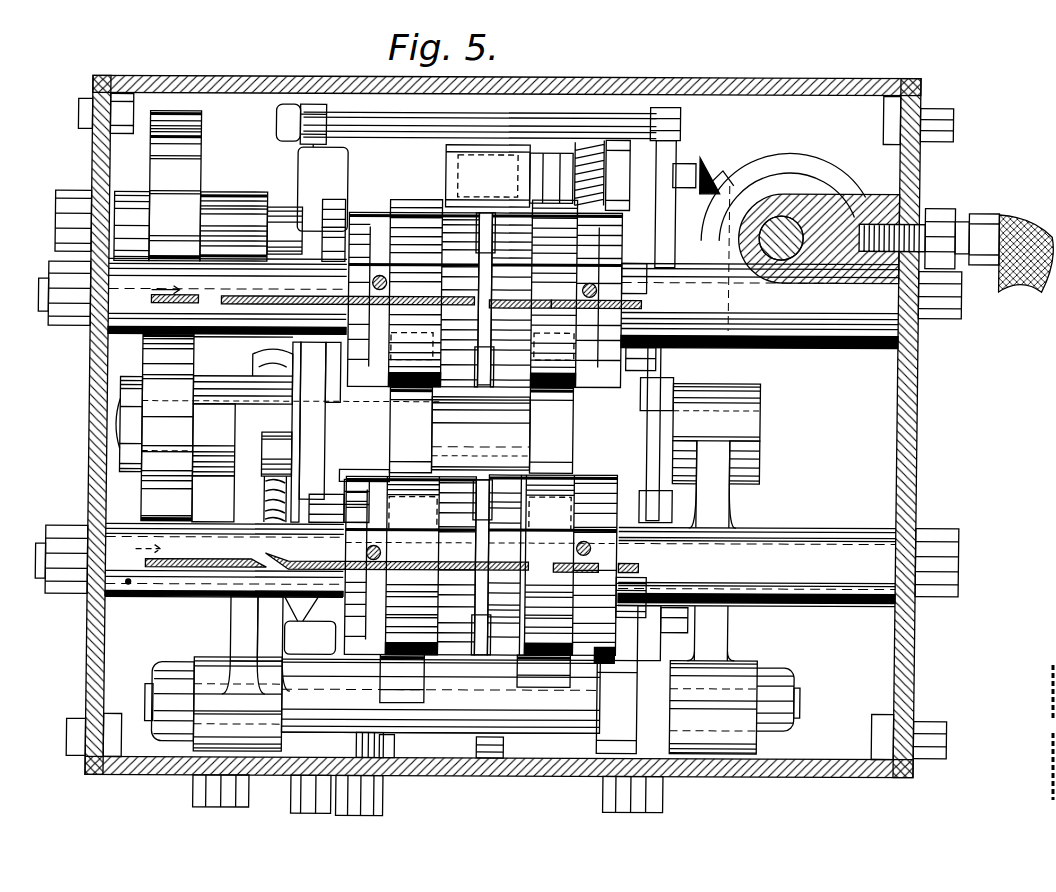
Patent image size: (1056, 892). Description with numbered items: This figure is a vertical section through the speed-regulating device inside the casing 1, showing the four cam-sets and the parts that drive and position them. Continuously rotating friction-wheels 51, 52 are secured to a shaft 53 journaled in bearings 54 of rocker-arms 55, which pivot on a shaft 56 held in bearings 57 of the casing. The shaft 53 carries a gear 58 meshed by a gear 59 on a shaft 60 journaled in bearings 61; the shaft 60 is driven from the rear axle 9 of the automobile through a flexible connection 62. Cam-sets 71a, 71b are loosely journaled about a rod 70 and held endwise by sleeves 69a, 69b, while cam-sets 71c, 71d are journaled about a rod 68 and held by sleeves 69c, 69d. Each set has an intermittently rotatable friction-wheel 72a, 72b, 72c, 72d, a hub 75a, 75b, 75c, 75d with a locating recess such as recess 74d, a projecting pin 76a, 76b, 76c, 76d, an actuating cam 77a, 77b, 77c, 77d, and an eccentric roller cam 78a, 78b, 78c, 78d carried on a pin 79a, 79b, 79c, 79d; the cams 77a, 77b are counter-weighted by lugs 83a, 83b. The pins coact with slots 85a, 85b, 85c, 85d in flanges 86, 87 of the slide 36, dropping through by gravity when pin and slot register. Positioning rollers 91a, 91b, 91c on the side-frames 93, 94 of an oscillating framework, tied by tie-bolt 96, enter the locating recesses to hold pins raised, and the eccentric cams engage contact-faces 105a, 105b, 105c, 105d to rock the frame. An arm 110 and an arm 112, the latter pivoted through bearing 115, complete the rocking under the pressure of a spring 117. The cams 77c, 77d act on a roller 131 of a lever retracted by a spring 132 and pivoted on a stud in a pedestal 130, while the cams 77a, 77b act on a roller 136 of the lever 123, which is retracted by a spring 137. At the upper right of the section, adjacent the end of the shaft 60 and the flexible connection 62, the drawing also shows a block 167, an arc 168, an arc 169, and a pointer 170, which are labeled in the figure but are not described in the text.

The casing 1 is at (897, 462).
The rear axle 9 is at (146, 423).
The slide 36 is at (243, 293).
The friction-wheel 51 is at (535, 430).
The friction-wheel 52 is at (420, 437).
The shaft 53 is at (116, 420).
The bearings 54 is at (220, 397).
The rocker-arms 55 is at (720, 512).
The shaft 56 is at (150, 688).
The bearings 57 is at (617, 713).
The gear 58 is at (155, 422).
The gear 59 is at (152, 170).
The shaft 60 is at (272, 215).
The bearings 61 is at (65, 195).
The flexible connection 62 is at (996, 268).
The rod 68 is at (107, 603).
The sleeve 69a is at (870, 340).
The sleeve 69b is at (137, 337).
The sleeve 69c is at (805, 527).
The sleeve 69d is at (113, 617).
The rod 70 is at (828, 326).
The cam-set 71a is at (556, 300).
The cam-set 71b is at (413, 299).
The cam-set 71c is at (552, 565).
The cam-set 71d is at (410, 565).
The intermittently rotatable friction-wheel 72a is at (542, 393).
The intermittently rotatable friction-wheel 72b is at (416, 392).
The intermittently rotatable friction-wheel 72c is at (560, 630).
The intermittently rotatable friction-wheel 72d is at (383, 643).
The locating recess 74d is at (352, 490).
The hub 75a is at (640, 303).
The hub 75b is at (340, 294).
The hub 75c is at (618, 567).
The hub 75d is at (290, 576).
The pin 76a is at (595, 290).
The pin 76b is at (379, 276).
The pin 76c is at (589, 550).
The pin 76d is at (365, 555).
The cam 77a is at (513, 270).
The cam 77b is at (453, 233).
The cam 77c is at (510, 514).
The cam 77d is at (450, 514).
The cam 78a is at (660, 350).
The cam 78b is at (343, 207).
The cam 78c is at (660, 635).
The cam 78d is at (350, 500).
The pin 79a is at (652, 333).
The pin 79b is at (330, 228).
The pin 79c is at (655, 582).
The pin 79d is at (318, 517).
The counter-weight lug 83a is at (607, 323).
The counter-weight lug 83b is at (445, 318).
The slot 85a is at (485, 302).
The slot 85b is at (197, 290).
The slot 85c is at (565, 572).
The slot 85d is at (262, 563).
The flange 86 is at (290, 340).
The flange 87 is at (130, 586).
The positioning roller 91a is at (648, 167).
The positioning roller 91b is at (320, 432).
The positioning roller 91c is at (627, 636).
The side-frame 93 is at (664, 234).
The side-frame 94 is at (300, 363).
The tie-bolt 96 is at (397, 124).
The contact-face 105a is at (657, 433).
The contact-face 105b is at (345, 172).
The contact-face 105c is at (660, 518).
The contact-face 105d is at (305, 625).
The arm 110 is at (290, 615).
The arm 112 is at (265, 497).
The bearing 115 is at (253, 345).
The spring 117 is at (266, 486).
The lever 123 is at (551, 190).
The pedestal 130 is at (408, 755).
The roller 131 is at (483, 682).
The spring 132 is at (520, 743).
The roller 136 is at (450, 168).
The spring 137 is at (590, 160).
The block 167 is at (783, 220).
The arc 168 is at (760, 203).
The arc 169 is at (757, 160).
The pointer 170 is at (718, 172).